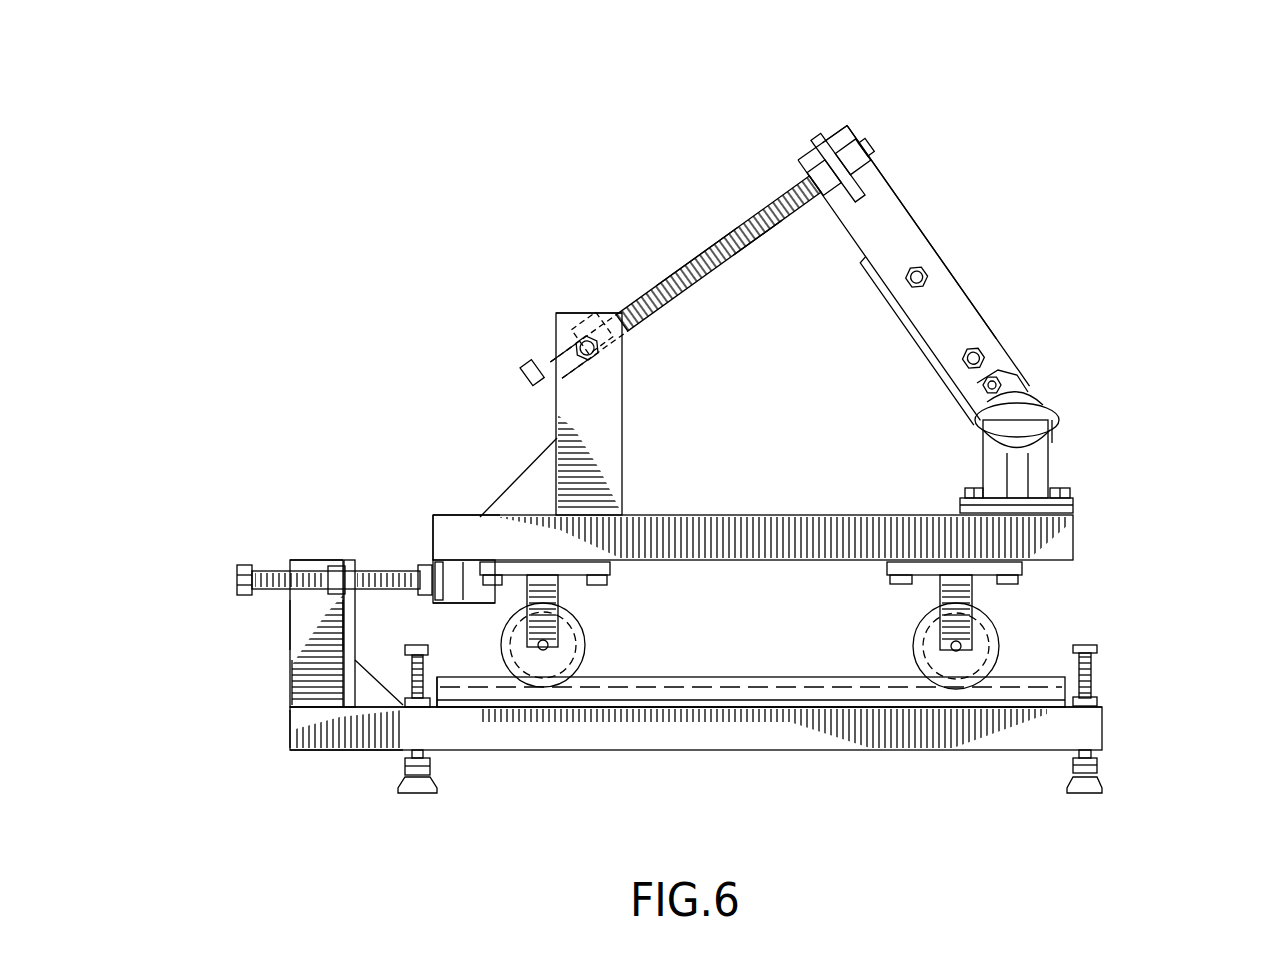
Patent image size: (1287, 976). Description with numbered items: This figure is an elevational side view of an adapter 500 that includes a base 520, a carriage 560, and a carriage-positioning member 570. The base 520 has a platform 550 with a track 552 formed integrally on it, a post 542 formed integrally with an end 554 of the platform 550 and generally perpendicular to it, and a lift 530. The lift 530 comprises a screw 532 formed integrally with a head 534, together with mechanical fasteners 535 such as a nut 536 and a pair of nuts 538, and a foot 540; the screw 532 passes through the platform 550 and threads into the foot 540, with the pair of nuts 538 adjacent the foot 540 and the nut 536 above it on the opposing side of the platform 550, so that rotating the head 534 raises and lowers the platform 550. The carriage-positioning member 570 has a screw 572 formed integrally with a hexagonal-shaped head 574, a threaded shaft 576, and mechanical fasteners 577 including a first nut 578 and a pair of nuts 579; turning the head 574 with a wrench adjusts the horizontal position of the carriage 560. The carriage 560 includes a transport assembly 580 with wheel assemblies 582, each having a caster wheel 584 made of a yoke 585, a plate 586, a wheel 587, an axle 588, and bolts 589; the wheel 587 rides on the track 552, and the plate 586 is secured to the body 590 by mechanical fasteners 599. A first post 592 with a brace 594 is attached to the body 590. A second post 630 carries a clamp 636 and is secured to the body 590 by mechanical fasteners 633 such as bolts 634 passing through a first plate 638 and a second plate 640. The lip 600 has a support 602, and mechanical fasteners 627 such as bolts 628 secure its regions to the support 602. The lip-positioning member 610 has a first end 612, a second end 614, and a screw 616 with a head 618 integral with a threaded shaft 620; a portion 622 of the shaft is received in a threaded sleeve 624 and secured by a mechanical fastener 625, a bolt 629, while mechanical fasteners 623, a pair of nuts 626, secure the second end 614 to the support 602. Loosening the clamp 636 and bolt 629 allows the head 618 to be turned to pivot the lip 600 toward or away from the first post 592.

The adapter 500 is at (375, 278).
The base 520 is at (170, 688).
The lift 530 is at (377, 770).
The screw 532 is at (437, 672).
The head 534 is at (417, 647).
The mechanical fasteners 535 is at (330, 763).
The nut 536 is at (420, 710).
The pair of nuts 538 is at (440, 770).
The foot 540 is at (400, 785).
The post 542 is at (297, 650).
The platform 550 is at (768, 733).
The track 552 is at (870, 688).
The end 554 is at (268, 752).
The carriage 560 is at (427, 450).
The carriage-positioning member 570 is at (197, 537).
The screw 572 is at (287, 528).
The hexagonal-shaped head 574 is at (240, 577).
The threaded shaft 576 is at (268, 593).
The mechanical fasteners 577 is at (252, 432).
The first nut 578 is at (342, 565).
The pair of nuts 579 is at (423, 577).
The transport assembly 580 is at (1047, 593).
The wheel assembly 582 is at (623, 548).
The caster wheel 584 is at (637, 645).
The yoke 585 is at (545, 613).
The plate 586 is at (613, 566).
The wheel 587 is at (577, 663).
The axle 588 is at (548, 650).
The bolts 589 is at (613, 584).
The body 590 is at (457, 522).
The first post 592 is at (615, 377).
The brace 594 is at (533, 487).
The mechanical fasteners 599 is at (510, 603).
The lip 600 is at (948, 168).
The support 602 is at (897, 228).
The lip-positioning member 610 is at (703, 217).
The first end 612 is at (527, 330).
The second end 614 is at (823, 118).
The screw 616 is at (667, 255).
The head 618 is at (533, 373).
The threaded shaft 620 is at (730, 265).
The portion 622 is at (592, 388).
The mechanical fasteners 623 is at (876, 127).
The threaded sleeve 624 is at (560, 307).
The mechanical fastener 625 is at (537, 320).
The pair of nuts 626 is at (798, 142).
The mechanical fasteners 627 is at (1100, 233).
The bolts 628 is at (923, 273).
The bolt 629 is at (585, 335).
The second post 630 is at (1068, 445).
The mechanical fasteners 633 is at (1102, 432).
The bolts 634 is at (967, 487).
The clamp 636 is at (1013, 415).
The first plate 638 is at (960, 503).
The second plate 640 is at (1077, 512).